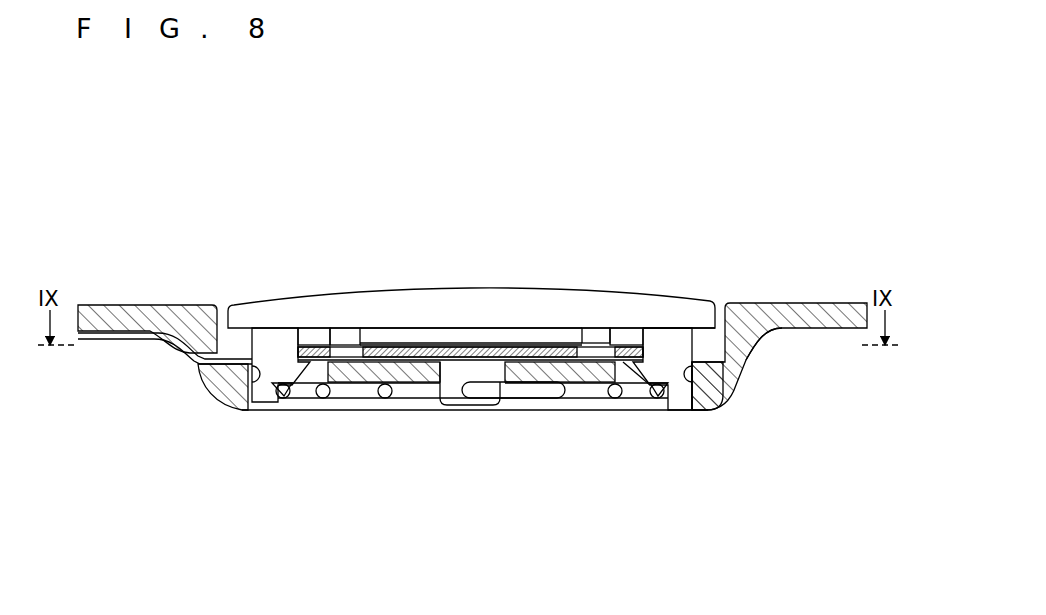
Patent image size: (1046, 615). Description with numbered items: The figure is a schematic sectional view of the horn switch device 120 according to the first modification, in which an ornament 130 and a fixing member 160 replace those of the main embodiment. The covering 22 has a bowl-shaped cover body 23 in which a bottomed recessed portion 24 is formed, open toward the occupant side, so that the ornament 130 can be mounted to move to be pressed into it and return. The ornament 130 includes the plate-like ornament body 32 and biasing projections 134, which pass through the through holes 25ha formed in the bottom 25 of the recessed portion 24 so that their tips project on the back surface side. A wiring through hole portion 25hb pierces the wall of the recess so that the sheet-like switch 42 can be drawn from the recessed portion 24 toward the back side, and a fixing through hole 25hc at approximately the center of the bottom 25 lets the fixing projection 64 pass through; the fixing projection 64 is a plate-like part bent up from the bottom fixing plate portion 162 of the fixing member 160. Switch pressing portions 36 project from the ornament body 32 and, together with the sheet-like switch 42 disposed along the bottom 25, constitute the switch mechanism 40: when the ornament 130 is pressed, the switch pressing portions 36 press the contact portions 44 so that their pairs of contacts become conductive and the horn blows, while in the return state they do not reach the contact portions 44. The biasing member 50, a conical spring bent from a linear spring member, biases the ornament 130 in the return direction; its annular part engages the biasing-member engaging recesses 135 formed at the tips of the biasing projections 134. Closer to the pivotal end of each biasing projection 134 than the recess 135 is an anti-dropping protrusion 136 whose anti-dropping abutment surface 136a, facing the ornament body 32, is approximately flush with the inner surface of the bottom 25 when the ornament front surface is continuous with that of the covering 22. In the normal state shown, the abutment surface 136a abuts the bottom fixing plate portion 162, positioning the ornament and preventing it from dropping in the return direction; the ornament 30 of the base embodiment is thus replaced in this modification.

The horn switch device 120 is at (527, 226).
The ornament 130 is at (348, 289).
The fixing member 160 is at (441, 345).
The bottom fixing plate portion 162 is at (530, 305).
The recessed portion 24 is at (233, 303).
The covering 22 is at (787, 302).
The cover body 23 is at (805, 322).
The bottom 25 is at (708, 360).
The through hole 25ha is at (220, 388).
The wiring through hole portion 25hb is at (205, 364).
The fixing through hole 25hc is at (451, 405).
The ornament 30 is at (660, 290).
The ornament body 32 is at (705, 300).
The switch pressing portion 36 is at (360, 336).
The switch mechanism 40 is at (322, 340).
The sheet-like switch 42 is at (490, 343).
The contact portion 44 is at (372, 383).
The biasing member 50 is at (540, 404).
The fixing projection 64 is at (488, 400).
The biasing projection 134 is at (262, 405).
The biasing-member engaging recess 135 is at (286, 398).
The anti-dropping protrusion 136 is at (326, 398).
The anti-dropping abutment surface 136a is at (300, 328).